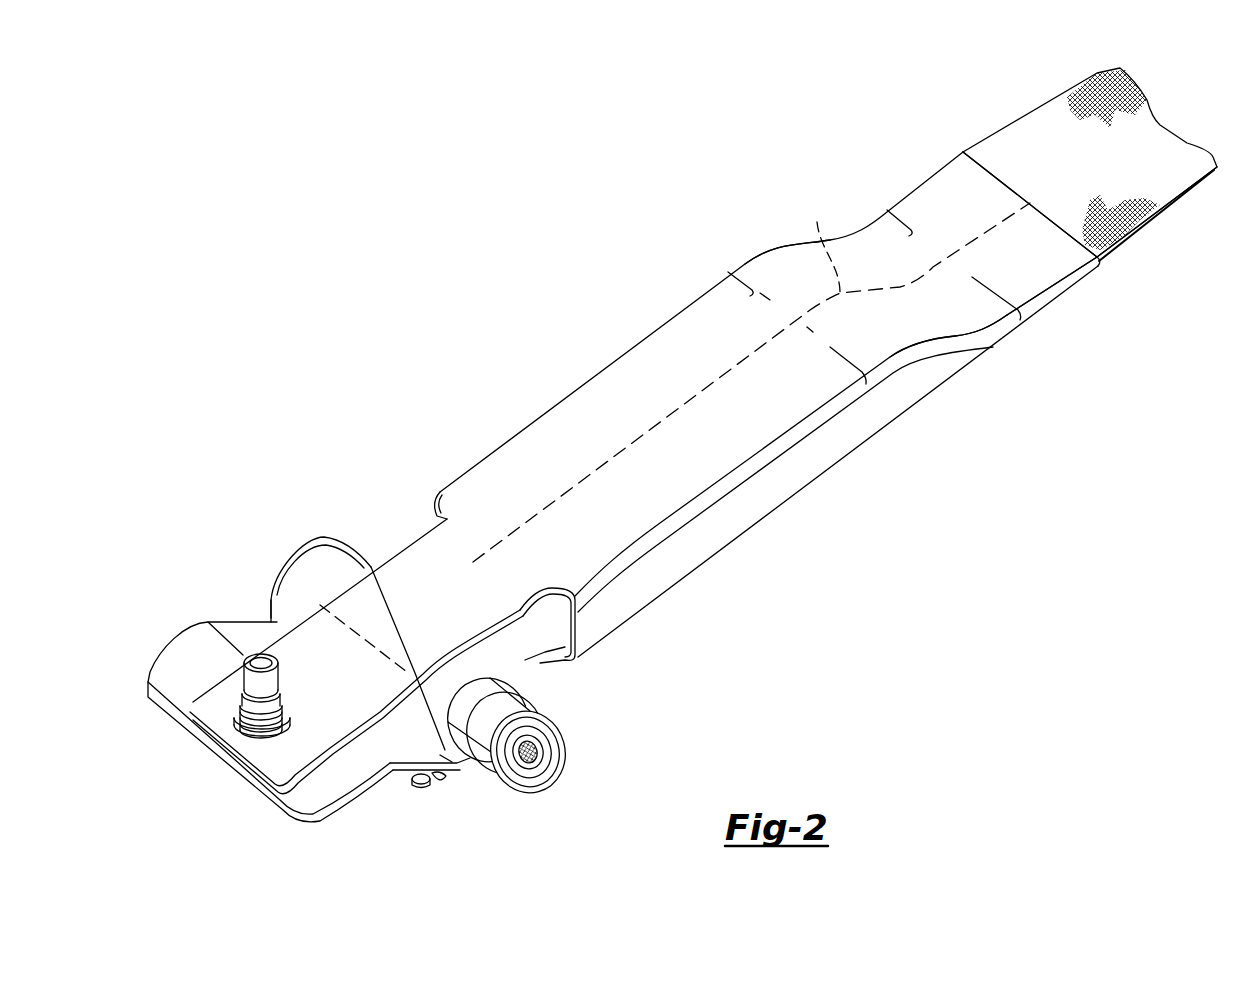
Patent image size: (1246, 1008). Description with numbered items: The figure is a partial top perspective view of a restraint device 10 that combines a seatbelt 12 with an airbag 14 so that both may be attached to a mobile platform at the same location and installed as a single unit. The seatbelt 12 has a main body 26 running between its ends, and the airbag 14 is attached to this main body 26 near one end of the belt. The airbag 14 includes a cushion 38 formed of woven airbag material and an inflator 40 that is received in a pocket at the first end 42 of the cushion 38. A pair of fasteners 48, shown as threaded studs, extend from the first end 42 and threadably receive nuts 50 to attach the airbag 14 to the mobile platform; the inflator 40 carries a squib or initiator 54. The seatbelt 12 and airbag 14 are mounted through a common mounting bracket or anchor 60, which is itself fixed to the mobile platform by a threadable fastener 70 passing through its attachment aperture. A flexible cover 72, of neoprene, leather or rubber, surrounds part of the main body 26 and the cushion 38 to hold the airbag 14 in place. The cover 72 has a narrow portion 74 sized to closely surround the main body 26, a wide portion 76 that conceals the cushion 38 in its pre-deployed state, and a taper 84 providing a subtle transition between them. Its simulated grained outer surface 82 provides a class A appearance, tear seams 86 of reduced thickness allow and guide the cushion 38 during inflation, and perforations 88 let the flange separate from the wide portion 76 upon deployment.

The restraint device 10 is at (612, 326).
The seatbelt 12 is at (1168, 186).
The airbag 14 is at (552, 603).
The main body 26 is at (1030, 143).
The cushion 38 is at (510, 647).
The inflator 40 is at (540, 702).
The first end 42 is at (450, 760).
The fasteners 48 is at (423, 780).
The nuts 50 is at (440, 782).
The initiator 54 is at (537, 763).
The anchor 60 is at (175, 638).
The fastener 70 is at (262, 655).
The cover 72 is at (508, 434).
The narrow portion 74 is at (946, 186).
The wide portion 76 is at (670, 342).
The simulated grained outer surface 82 is at (712, 306).
The taper 84 is at (947, 327).
The tear seams 86 is at (821, 242).
The perforations 88 is at (353, 633).